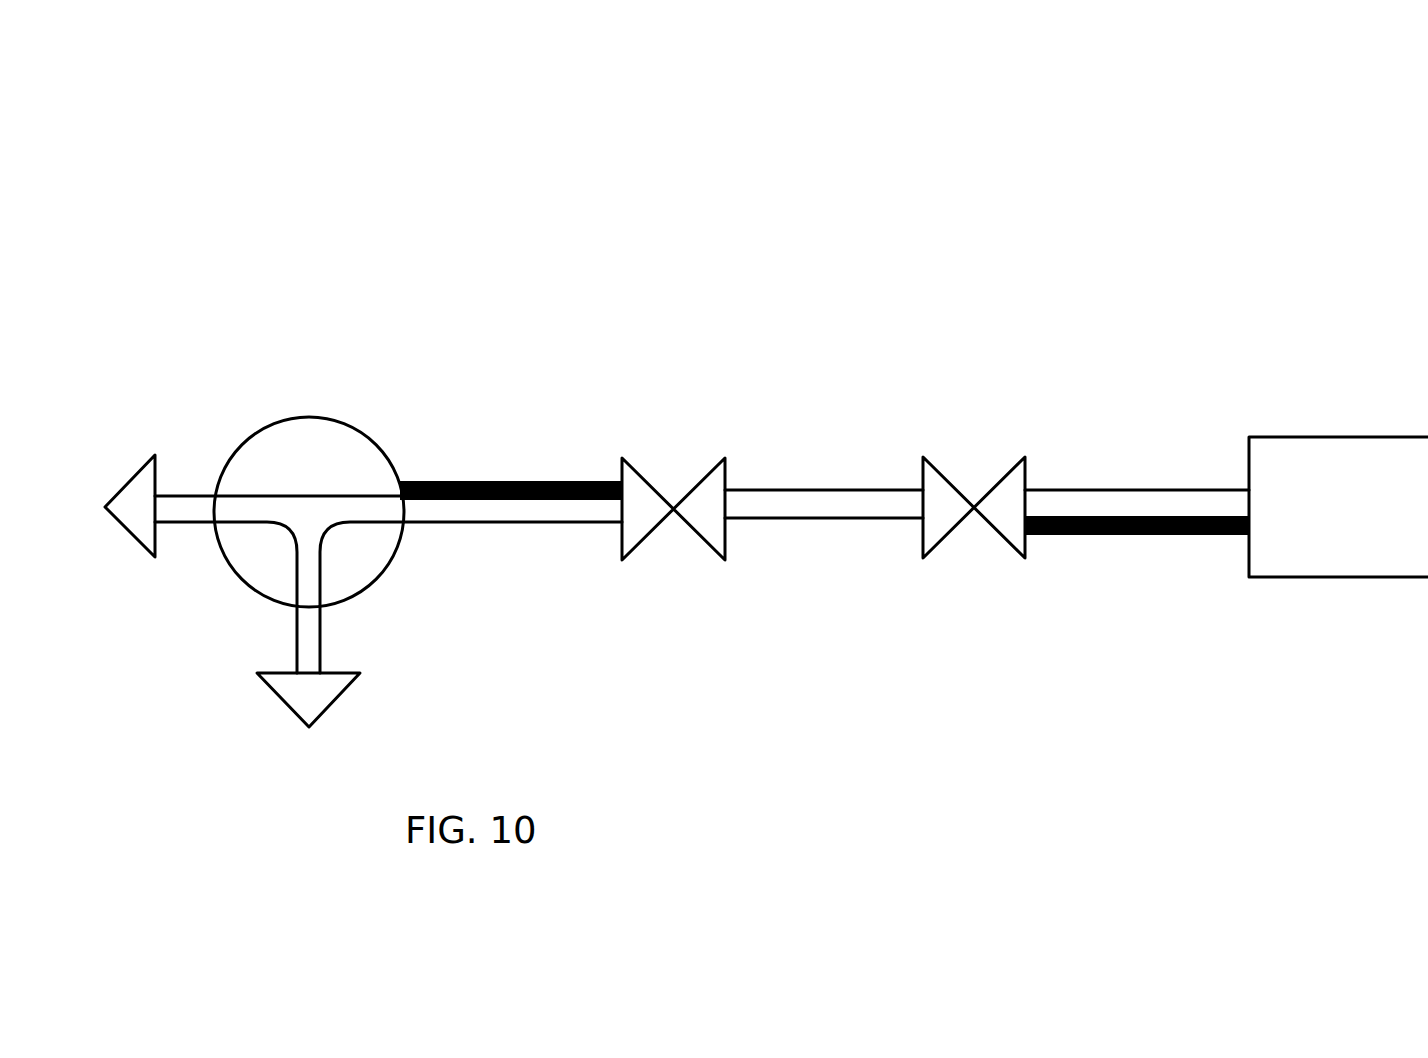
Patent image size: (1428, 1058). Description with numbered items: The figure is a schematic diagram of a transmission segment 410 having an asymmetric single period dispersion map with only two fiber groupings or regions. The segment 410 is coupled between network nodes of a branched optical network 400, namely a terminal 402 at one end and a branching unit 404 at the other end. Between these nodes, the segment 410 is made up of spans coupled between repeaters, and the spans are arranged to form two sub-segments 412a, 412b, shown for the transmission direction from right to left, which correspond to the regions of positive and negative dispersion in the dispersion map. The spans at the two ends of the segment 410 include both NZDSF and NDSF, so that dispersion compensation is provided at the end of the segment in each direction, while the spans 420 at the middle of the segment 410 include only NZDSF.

The branched optical network 400 is at (757, 185).
The terminal 402 is at (1380, 521).
The branching unit 404 is at (272, 432).
The transmission segment 410 is at (1240, 353).
The first sub-segment 412a is at (667, 457).
The second sub-segment 412b is at (1250, 457).
The middle spans 420 is at (818, 522).